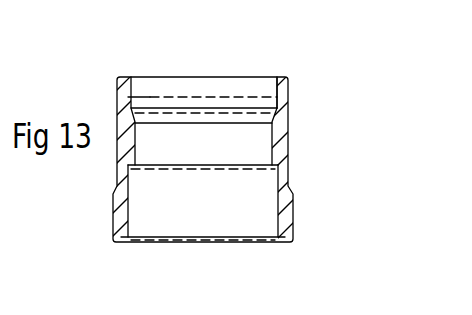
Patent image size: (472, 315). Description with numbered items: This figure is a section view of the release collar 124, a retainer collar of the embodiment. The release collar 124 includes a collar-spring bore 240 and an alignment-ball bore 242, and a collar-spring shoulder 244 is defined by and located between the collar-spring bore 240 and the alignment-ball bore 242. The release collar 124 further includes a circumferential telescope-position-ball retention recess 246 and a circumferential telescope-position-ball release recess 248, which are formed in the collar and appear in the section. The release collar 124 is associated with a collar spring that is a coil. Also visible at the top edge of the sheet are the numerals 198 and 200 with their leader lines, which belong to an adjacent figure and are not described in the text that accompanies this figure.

The release collar 124 is at (92, 187).
The port 198 is at (25, 0).
The passage 200 is at (43, 0).
The collar-spring bore 240 is at (134, 193).
The alignment-ball bore 242 is at (133, 142).
The collar-spring shoulder 244 is at (130, 165).
The circumferential telescope-position-ball retention recess 246 is at (272, 122).
The circumferential telescope-position-ball release recess 248 is at (278, 100).